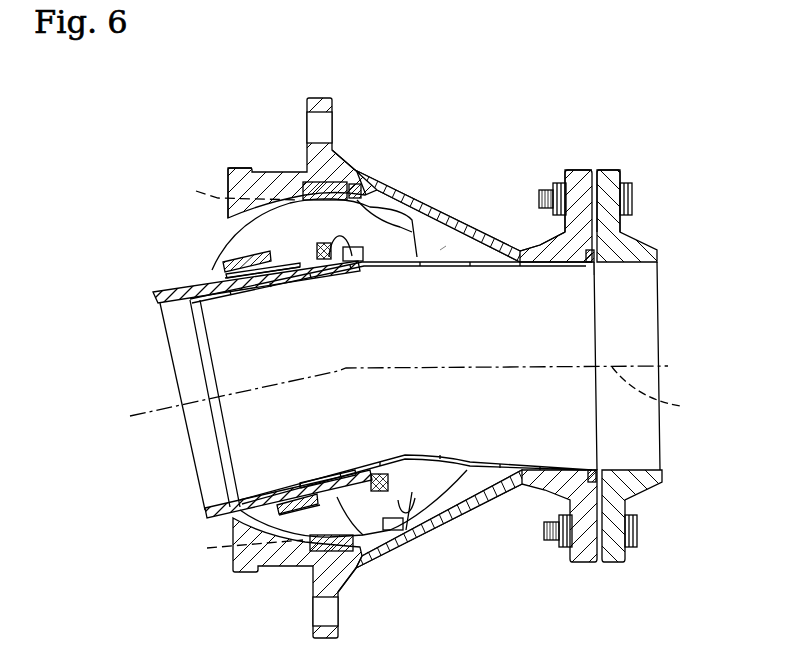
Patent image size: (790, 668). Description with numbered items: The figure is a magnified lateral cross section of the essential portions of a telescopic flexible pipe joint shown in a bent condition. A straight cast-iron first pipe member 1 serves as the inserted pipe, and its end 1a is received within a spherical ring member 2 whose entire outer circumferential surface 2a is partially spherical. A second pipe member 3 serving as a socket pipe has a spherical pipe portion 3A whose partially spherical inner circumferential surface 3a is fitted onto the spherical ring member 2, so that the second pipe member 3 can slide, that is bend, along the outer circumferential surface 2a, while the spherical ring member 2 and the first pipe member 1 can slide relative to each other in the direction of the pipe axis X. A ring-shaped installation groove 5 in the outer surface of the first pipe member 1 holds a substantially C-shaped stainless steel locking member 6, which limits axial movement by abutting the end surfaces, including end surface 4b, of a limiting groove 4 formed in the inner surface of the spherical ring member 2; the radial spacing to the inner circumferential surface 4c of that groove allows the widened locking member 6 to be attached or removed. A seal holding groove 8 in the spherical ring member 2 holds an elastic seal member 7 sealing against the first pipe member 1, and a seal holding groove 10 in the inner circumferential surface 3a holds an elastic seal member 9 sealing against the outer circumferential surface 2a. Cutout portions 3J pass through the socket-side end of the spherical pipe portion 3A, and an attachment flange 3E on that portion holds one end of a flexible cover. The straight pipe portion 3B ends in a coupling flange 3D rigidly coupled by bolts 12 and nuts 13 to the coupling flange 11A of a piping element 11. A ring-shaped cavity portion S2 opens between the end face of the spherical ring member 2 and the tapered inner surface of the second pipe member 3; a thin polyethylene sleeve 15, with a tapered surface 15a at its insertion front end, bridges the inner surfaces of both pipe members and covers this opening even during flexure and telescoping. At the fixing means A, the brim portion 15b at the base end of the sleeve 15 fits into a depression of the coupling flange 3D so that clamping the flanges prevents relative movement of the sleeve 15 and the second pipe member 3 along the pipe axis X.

The first pipe member 1 is at (151, 290).
The end of first pipe 1a is at (163, 307).
The spherical ring member 2 is at (400, 208).
The outer circumferential surface 2a is at (396, 530).
The second pipe member 3 is at (343, 158).
The spherical pipe portion 3A is at (341, 154).
The inner circumferential surface 3a is at (428, 467).
The straight pipe portion 3B is at (546, 258).
The coupling flange 3D is at (580, 170).
The attachment flange 3E is at (242, 168).
The cutout portion 3J is at (235, 369).
The limiting groove 4 is at (357, 225).
The end surface of limiting groove 4b is at (295, 277).
The inner circumferential surface of limiting groove 4c is at (294, 280).
The installation groove 5 is at (334, 268).
The locking member 6 is at (355, 265).
The elastic seal member 7 is at (220, 262).
The seal holding groove 8 is at (239, 292).
The elastic seal member 9 is at (306, 186).
The seal holding groove 10 is at (356, 165).
The piping element 11 is at (633, 247).
The coupling flange 11A is at (605, 169).
The bolt 12 is at (632, 197).
The nut 13 is at (557, 184).
The sleeve 15 is at (483, 268).
The tapered surface 15a is at (217, 418).
The brim portion 15b is at (600, 261).
The ring-shaped cavity portion S2 is at (444, 247).
The fixing means A is at (597, 275).
The pipe axis X is at (413, 394).